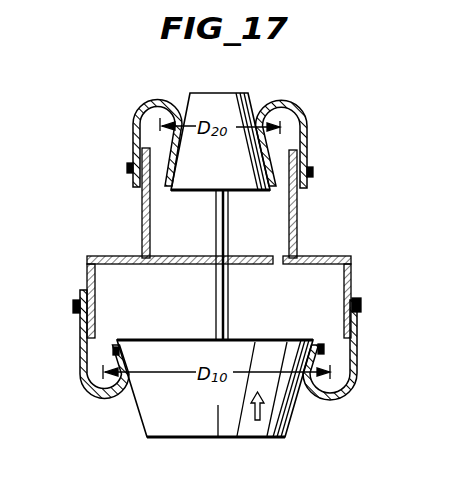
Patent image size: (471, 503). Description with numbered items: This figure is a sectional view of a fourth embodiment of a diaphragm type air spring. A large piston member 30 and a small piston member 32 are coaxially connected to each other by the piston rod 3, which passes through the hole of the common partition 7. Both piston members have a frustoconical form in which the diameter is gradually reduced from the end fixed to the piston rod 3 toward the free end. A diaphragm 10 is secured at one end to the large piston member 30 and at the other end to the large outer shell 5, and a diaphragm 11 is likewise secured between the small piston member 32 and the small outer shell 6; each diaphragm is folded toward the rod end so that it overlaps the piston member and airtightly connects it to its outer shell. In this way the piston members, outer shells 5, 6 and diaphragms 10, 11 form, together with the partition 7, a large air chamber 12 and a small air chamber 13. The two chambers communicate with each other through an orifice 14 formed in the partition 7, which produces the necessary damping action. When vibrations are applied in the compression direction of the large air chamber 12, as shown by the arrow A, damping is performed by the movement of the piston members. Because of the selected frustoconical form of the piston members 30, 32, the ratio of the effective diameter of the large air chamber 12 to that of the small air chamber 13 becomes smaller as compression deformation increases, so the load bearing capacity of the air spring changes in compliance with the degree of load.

The piston rod 3 is at (215, 220).
The large outer shell 5 is at (350, 258).
The small outer shell 6 is at (142, 189).
The partition 7 is at (90, 275).
The diaphragm 10 is at (357, 366).
The diaphragm 11 is at (308, 128).
The large air chamber 12 is at (308, 296).
The small air chamber 13 is at (260, 208).
The orifice 14 is at (283, 258).
The large piston member 30 is at (188, 415).
The small piston member 32 is at (233, 93).